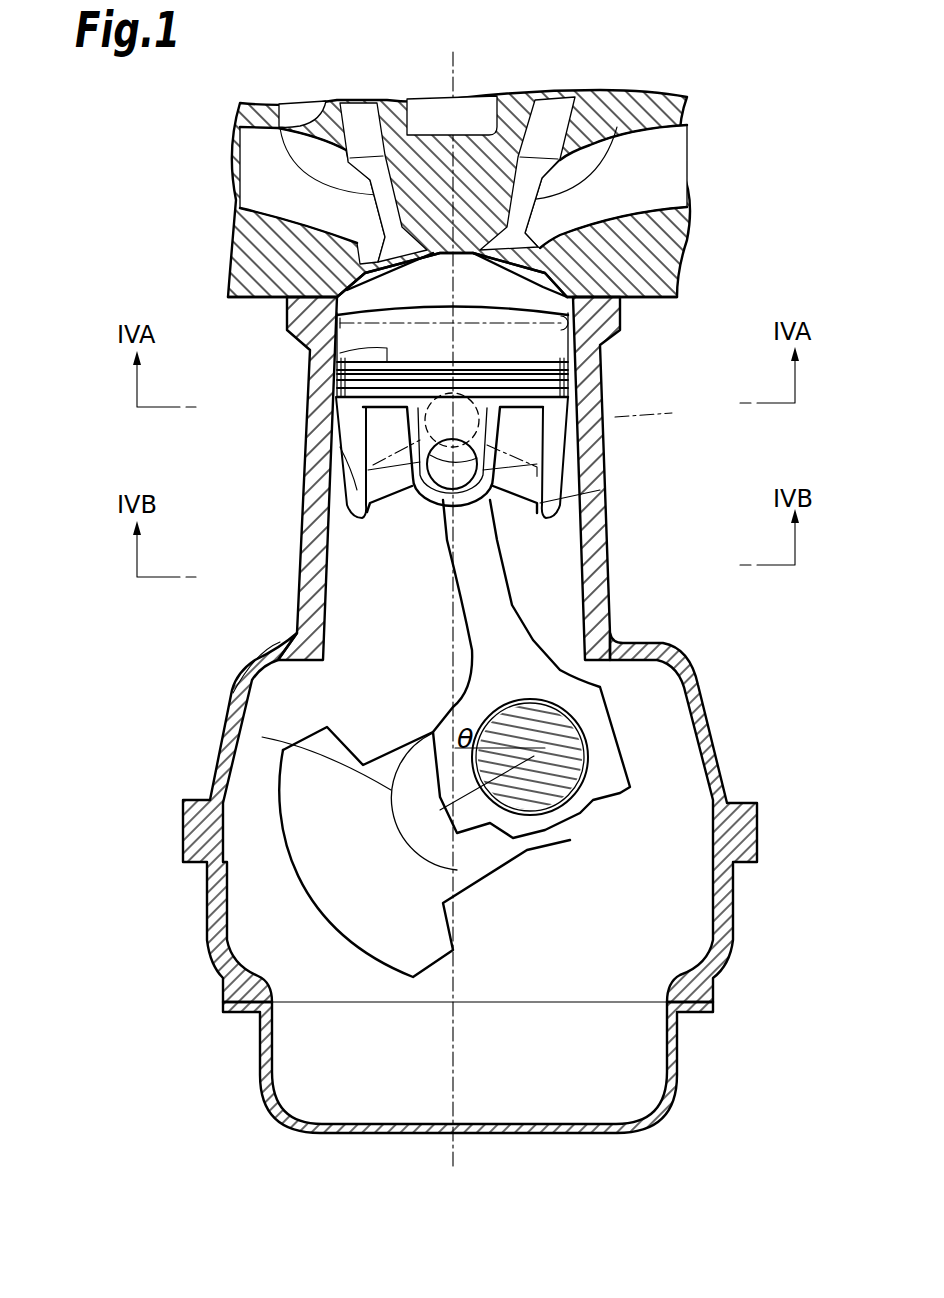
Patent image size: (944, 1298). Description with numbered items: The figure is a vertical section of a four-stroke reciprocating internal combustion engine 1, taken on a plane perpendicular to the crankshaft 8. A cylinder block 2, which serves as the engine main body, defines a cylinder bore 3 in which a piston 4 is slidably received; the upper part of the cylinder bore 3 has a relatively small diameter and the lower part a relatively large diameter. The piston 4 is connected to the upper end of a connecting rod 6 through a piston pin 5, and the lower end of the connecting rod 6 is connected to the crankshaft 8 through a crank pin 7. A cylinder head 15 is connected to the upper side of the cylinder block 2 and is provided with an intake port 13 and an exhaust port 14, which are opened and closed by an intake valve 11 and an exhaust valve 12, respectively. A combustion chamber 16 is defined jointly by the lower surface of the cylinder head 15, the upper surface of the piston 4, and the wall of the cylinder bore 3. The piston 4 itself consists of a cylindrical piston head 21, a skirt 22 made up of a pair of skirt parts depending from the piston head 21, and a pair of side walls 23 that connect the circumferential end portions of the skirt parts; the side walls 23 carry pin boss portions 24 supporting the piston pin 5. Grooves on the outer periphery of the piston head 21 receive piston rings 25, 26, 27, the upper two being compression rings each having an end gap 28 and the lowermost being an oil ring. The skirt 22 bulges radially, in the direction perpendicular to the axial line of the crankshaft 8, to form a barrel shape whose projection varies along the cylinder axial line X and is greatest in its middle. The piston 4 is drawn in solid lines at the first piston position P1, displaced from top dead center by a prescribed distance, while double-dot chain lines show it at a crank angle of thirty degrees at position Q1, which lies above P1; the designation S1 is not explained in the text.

The internal combustion engine 1 is at (668, 55).
The cylinder block 2 is at (297, 542).
The cylinder bore 3 is at (567, 324).
The piston 4 is at (470, 358).
The piston pin 5 is at (430, 505).
The connecting rod 6 is at (510, 637).
The crank pin 7 is at (560, 733).
The crankshaft 8 is at (262, 737).
The intake valve 11 is at (282, 127).
The exhaust valve 12 is at (610, 127).
The intake port 13 is at (258, 200).
The exhaust port 14 is at (665, 207).
The cylinder head 15 is at (668, 242).
The combustion chamber 16 is at (287, 333).
The piston head 21 is at (345, 363).
The skirt 22 is at (357, 490).
The side walls 23 is at (413, 420).
The pin boss portions 24 is at (545, 510).
The piston ring 25 is at (573, 362).
The piston ring 26 is at (575, 380).
The piston ring 27 is at (337, 390).
The end gap 28 is at (452, 372).
The piston position at crank angle of thirty degrees Q1 is at (540, 439).
The skirt sliding surface S1 is at (583, 463).
The first piston position P1 is at (600, 490).
The cylinder axial line X is at (451, 598).